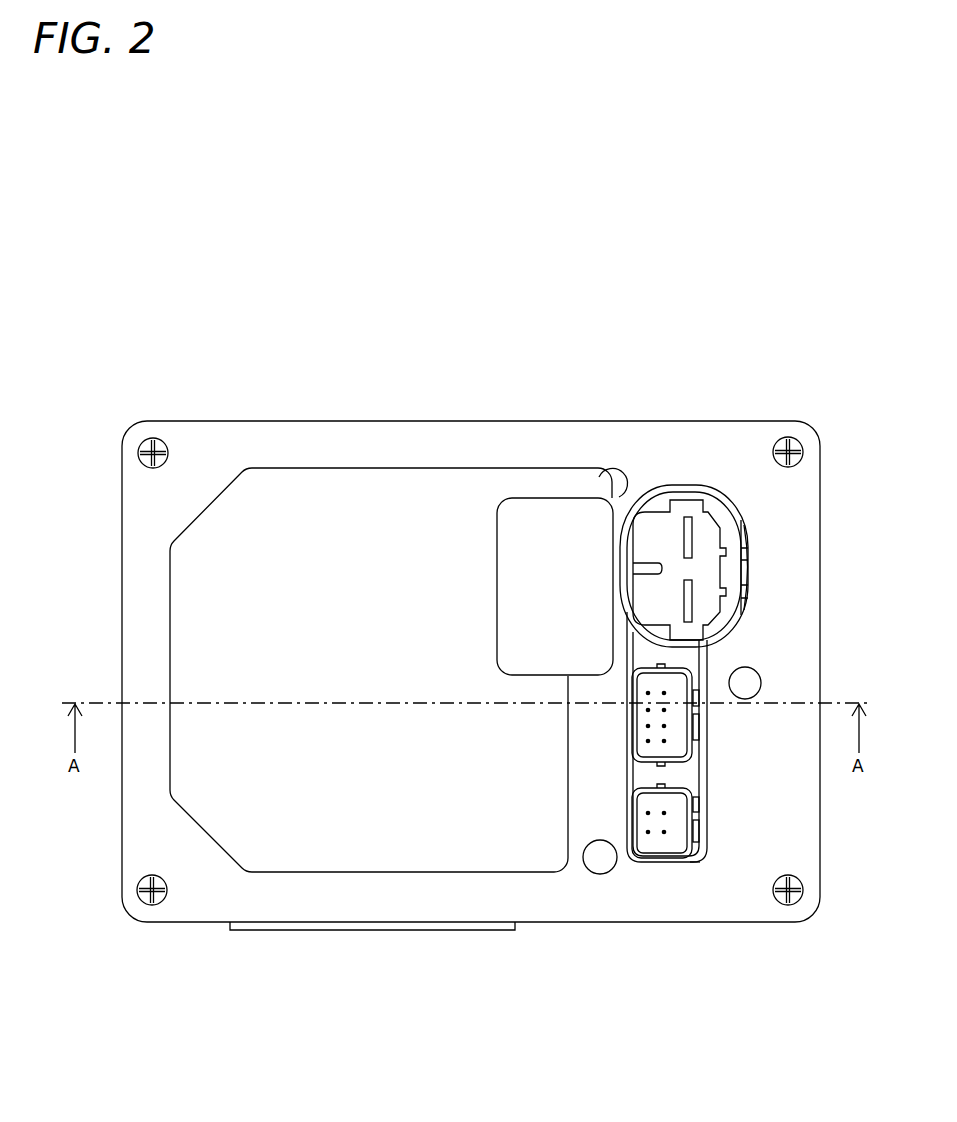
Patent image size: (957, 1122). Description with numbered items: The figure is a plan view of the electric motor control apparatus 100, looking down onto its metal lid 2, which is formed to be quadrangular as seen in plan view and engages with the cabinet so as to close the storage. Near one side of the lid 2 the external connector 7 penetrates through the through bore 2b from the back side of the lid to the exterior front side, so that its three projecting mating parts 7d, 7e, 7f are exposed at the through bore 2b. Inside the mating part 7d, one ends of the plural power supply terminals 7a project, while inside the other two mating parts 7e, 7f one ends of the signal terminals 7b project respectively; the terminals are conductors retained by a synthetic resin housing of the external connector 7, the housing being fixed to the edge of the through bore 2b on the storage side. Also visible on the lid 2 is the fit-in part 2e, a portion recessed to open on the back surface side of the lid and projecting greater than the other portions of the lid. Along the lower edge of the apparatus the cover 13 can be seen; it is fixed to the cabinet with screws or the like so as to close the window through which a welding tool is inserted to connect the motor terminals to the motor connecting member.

The electric motor control apparatus 100 is at (185, 300).
The lid 2 is at (227, 421).
The fit-in part 2e is at (565, 497).
The through bore 2b is at (741, 603).
The external connector 7 is at (754, 567).
The mating part 7d is at (741, 543).
The power supply terminals 7a is at (697, 538).
The signal terminals 7b is at (645, 745).
The mating part 7e is at (700, 773).
The mating part 7f is at (695, 862).
The cover 13 is at (386, 931).